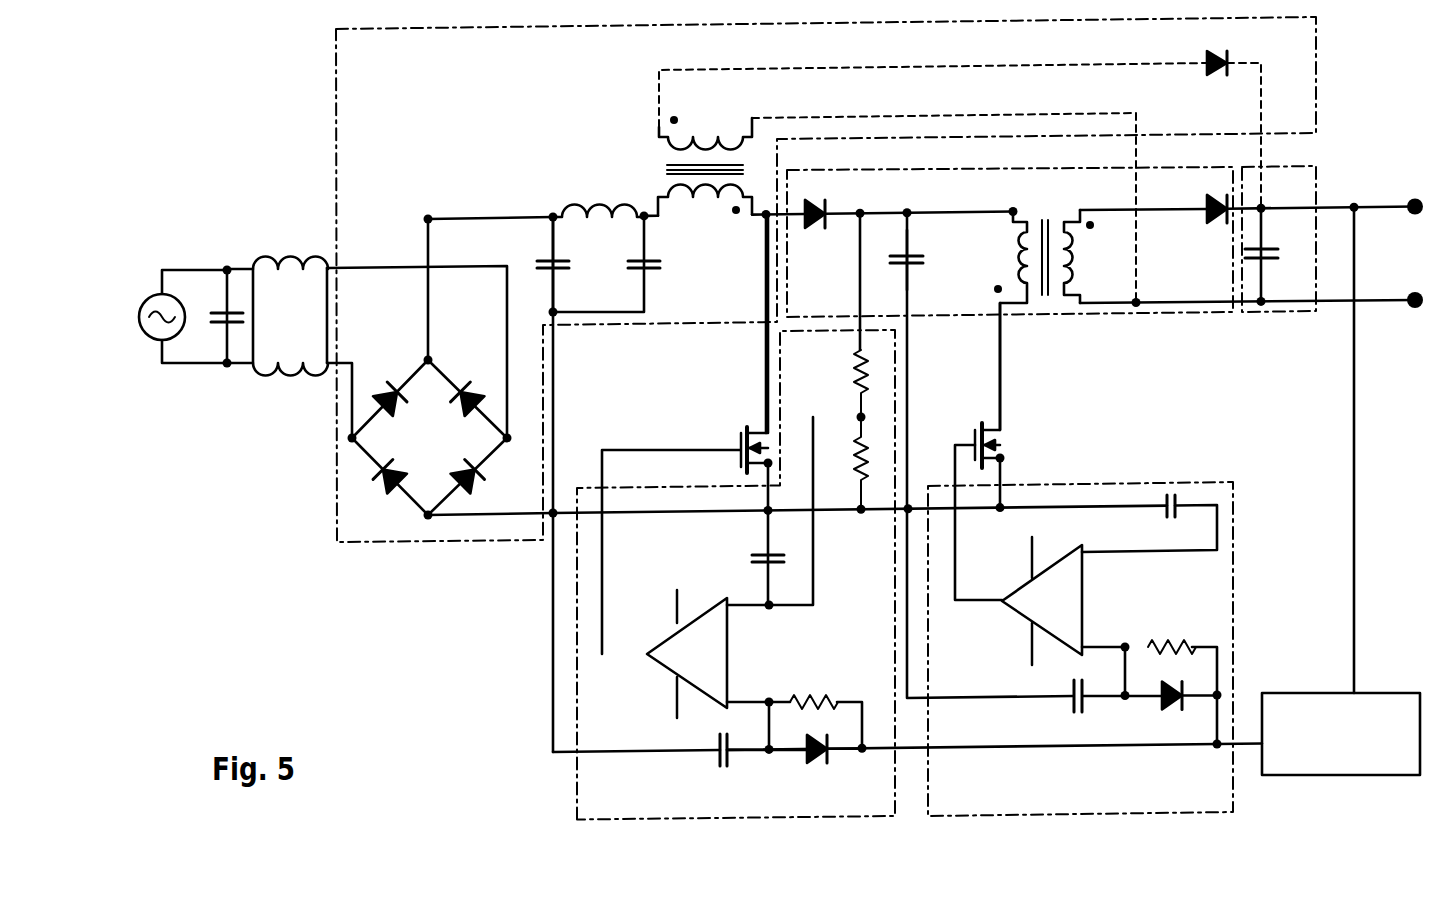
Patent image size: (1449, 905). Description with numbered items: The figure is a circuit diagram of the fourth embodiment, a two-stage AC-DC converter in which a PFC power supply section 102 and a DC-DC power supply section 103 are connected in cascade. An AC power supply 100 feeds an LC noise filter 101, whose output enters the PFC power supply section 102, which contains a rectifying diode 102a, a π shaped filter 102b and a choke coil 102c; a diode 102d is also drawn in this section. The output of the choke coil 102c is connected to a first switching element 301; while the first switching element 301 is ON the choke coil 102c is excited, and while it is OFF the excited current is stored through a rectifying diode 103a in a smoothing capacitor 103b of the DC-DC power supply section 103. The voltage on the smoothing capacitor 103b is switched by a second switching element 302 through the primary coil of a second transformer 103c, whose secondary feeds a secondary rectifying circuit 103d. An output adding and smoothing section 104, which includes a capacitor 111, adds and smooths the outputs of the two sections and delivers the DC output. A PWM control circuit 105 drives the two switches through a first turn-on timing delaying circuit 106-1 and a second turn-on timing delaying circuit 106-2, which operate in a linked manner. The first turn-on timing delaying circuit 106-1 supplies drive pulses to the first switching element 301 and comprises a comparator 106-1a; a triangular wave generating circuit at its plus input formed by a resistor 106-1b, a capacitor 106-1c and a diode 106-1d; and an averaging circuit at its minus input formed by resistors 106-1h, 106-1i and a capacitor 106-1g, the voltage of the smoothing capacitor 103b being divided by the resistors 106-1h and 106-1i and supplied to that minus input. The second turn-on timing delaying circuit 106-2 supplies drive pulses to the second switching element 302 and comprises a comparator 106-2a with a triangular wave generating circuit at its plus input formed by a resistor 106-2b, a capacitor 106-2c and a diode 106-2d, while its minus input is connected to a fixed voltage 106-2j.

The AC power supply 100 is at (182, 347).
The LC noise filter 101 is at (269, 341).
The PFC power supply section 102 is at (385, 542).
The rectifying diode 102a is at (444, 438).
The π shaped filter 102b is at (598, 258).
The choke coil 102c is at (705, 179).
The diode 102d is at (960, 177).
The DC-DC power supply section 103 is at (1093, 313).
The rectifying diode 103a is at (817, 231).
The smoothing capacitor 103b is at (926, 263).
The second transformer 103c is at (1044, 312).
The secondary rectifying circuit 103d is at (1192, 224).
The output adding and smoothing section 104 is at (1268, 313).
The output capacitor 111 is at (1273, 254).
The PWM control circuit 105 is at (1395, 698).
The first switching element 301 is at (687, 434).
The second switching element 302 is at (972, 451).
The first turn-on timing delaying circuit 106-1 is at (588, 810).
The comparator 106-1a is at (657, 654).
The resistor 106-1b is at (807, 676).
The capacitor 106-1c is at (687, 766).
The diode 106-1d is at (807, 766).
The capacitor 106-1g is at (728, 557).
The resistor 106-1h is at (821, 386).
The resistor 106-1i is at (852, 480).
The second turn-on timing delaying circuit 106-2 is at (1228, 795).
The comparator 106-2a is at (1011, 600).
The resistor 106-2b is at (1168, 630).
The capacitor 106-2c is at (1164, 714).
The diode 106-2d is at (1042, 712).
The fixed voltage 106-2j is at (1165, 521).